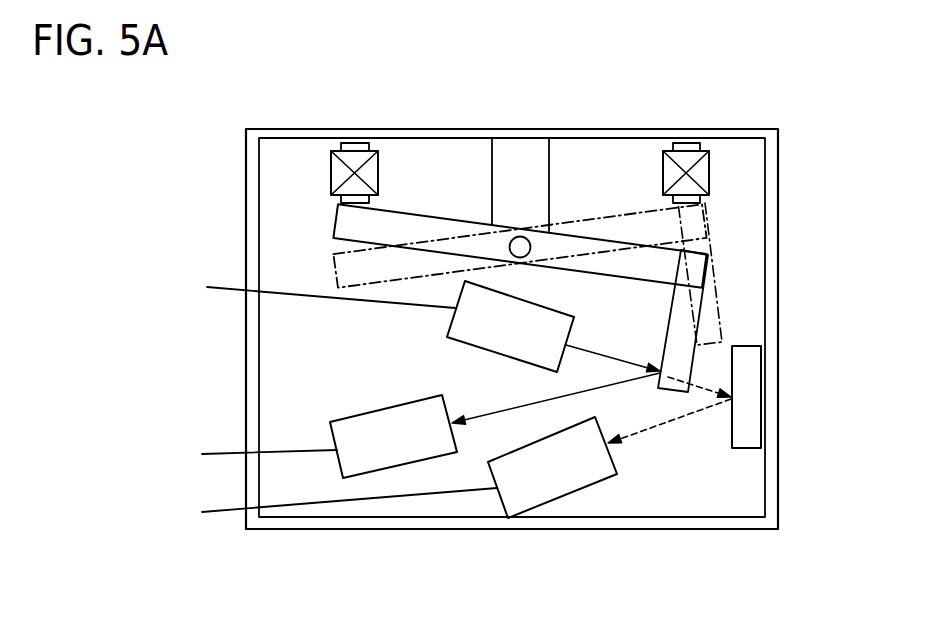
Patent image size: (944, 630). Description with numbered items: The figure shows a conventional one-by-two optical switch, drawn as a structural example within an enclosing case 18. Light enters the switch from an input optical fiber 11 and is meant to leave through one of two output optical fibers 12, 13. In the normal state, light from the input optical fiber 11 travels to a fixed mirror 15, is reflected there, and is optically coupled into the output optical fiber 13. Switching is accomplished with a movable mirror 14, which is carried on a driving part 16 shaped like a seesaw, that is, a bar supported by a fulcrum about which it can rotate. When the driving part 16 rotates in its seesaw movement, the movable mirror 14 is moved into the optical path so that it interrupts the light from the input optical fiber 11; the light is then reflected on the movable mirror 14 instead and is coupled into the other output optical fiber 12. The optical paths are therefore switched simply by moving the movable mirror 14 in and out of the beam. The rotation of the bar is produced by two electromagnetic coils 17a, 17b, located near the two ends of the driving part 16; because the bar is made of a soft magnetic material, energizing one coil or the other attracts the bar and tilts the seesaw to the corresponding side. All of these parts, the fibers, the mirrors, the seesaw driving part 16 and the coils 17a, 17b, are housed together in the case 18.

The input optical fiber 11 is at (549, 308).
The output optical fiber 12 is at (385, 469).
The output optical fiber 13 is at (565, 495).
The movable mirror 14 is at (668, 343).
The fixed mirror 15 is at (732, 382).
The driving part 16 is at (700, 251).
The electromagnetic coil 17a is at (332, 168).
The electromagnetic coil 17b is at (709, 173).
The case 18 is at (733, 531).